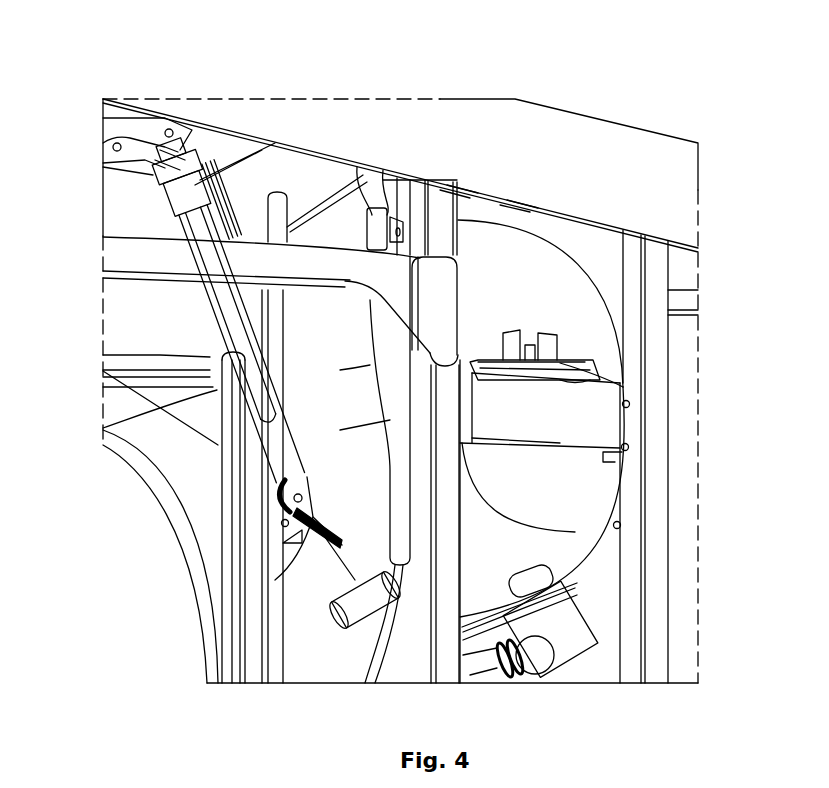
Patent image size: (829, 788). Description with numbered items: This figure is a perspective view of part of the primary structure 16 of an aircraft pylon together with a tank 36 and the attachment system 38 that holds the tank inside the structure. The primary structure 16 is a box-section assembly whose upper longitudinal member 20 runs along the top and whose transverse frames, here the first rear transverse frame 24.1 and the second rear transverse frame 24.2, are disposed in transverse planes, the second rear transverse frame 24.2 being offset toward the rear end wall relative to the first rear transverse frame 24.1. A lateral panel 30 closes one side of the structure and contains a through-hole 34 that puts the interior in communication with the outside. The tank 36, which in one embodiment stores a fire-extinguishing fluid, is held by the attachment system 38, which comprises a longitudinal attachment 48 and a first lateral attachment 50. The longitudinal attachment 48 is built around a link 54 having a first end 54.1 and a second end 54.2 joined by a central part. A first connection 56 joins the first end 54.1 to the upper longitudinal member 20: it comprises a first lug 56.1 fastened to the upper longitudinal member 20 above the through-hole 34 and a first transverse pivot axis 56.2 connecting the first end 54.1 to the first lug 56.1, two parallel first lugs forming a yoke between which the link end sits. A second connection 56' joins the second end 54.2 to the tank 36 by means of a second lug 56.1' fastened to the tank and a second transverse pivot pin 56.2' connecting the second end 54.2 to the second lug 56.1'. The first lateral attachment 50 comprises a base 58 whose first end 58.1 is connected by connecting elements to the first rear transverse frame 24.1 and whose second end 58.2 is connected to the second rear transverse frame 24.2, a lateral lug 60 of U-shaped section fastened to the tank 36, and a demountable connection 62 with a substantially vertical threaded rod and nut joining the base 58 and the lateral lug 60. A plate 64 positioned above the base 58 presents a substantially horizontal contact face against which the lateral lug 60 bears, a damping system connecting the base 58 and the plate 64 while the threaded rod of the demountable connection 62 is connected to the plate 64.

The primary structure 16 is at (623, 120).
The upper longitudinal member 20 is at (538, 108).
The first rear transverse frame 24.1 is at (444, 669).
The second rear transverse frame 24.2 is at (660, 320).
The lateral panel 30 is at (688, 578).
The through-hole 34 is at (253, 486).
The tank 36 is at (586, 493).
The attachment system 38 is at (246, 362).
The longitudinal attachment 48 is at (232, 318).
The first lateral attachment 50 is at (567, 430).
The link 54 is at (250, 398).
The first end of the link 54.1 is at (113, 148).
The second end of the link 54.2 is at (293, 494).
The first connection 56 is at (193, 98).
The first lug 56.1 is at (110, 126).
The first transverse pivot axis 56.2 is at (156, 90).
The second connection 56' is at (245, 550).
The second lug 56.1' is at (213, 572).
The second transverse pivot pin 56.2' is at (187, 520).
The base 58 is at (660, 282).
The first end of the base 58.1 is at (577, 536).
The second end of the base 58.2 is at (632, 400).
The lateral lug 60 is at (585, 345).
The demountable connection 62 is at (533, 340).
The plate 64 is at (500, 360).